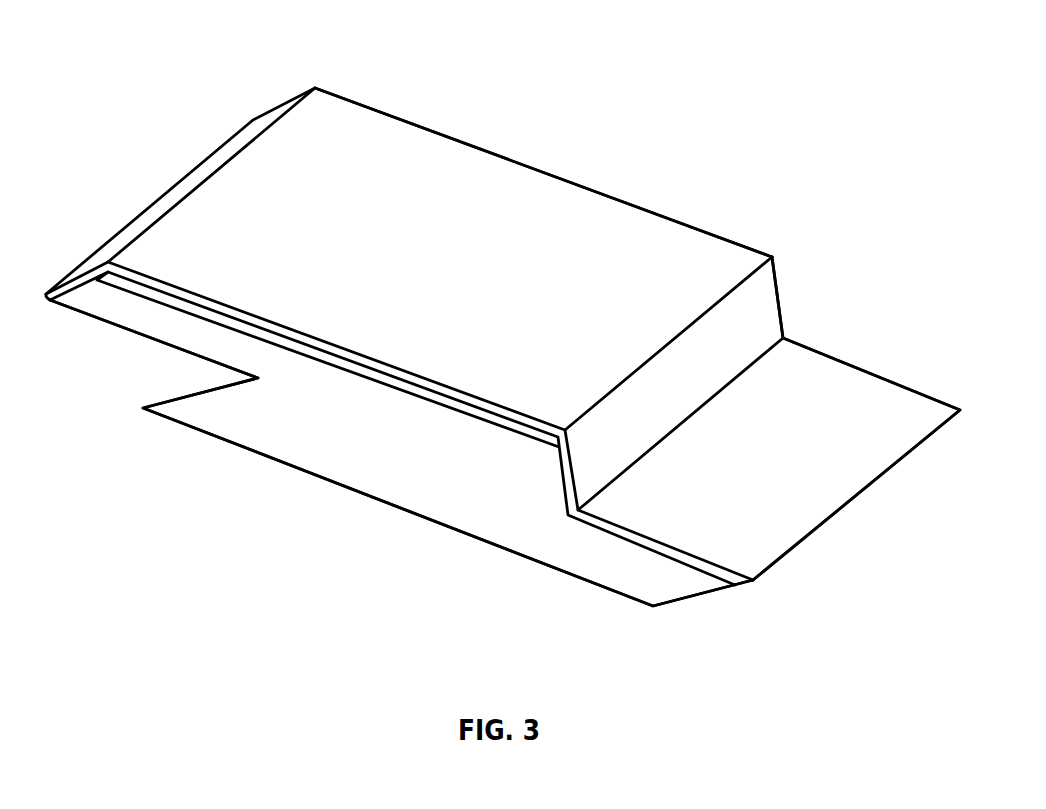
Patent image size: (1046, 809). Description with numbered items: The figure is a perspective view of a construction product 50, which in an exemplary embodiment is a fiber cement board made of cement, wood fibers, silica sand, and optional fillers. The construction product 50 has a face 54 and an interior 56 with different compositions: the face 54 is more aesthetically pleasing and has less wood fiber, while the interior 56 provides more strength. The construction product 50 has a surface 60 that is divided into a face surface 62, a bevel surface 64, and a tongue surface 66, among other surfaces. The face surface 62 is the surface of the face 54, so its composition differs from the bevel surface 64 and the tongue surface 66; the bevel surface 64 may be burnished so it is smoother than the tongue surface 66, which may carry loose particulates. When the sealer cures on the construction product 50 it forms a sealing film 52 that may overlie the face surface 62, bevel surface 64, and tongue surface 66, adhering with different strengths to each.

The construction product 50 is at (788, 123).
The sealing film 52 is at (350, 127).
The face 54 is at (148, 292).
The interior 56 is at (312, 453).
The surface 60 is at (440, 222).
The face surface 62 is at (572, 237).
The bevel surface 64 is at (760, 302).
The tongue surface 66 is at (875, 408).